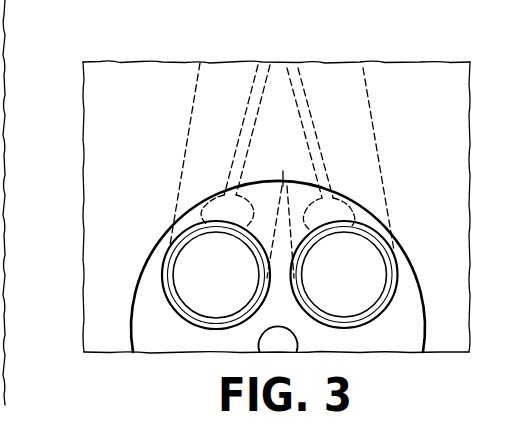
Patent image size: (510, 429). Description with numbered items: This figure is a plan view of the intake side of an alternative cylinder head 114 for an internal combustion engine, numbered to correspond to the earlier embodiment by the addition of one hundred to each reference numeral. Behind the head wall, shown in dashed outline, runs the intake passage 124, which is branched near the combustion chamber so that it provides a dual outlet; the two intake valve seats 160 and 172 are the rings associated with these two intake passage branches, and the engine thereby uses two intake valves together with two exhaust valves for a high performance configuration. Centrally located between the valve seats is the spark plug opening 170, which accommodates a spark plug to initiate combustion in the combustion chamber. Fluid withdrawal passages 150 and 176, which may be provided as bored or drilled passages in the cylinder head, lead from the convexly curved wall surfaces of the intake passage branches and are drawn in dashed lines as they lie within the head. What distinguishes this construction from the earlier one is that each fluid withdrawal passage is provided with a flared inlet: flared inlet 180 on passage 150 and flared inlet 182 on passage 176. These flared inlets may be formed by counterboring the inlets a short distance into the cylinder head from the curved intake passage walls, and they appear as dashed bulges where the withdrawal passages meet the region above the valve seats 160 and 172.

The cylinder head 114 is at (111, 292).
The intake passage 124 is at (322, 93).
The fluid withdrawal passage 150 is at (235, 162).
The fluid withdrawal passage 176 is at (312, 163).
The flared inlet 180 is at (206, 205).
The flared inlet 182 is at (336, 212).
The valve seat 160 is at (171, 255).
The valve seat 172 is at (378, 262).
The spark plug opening 170 is at (284, 336).